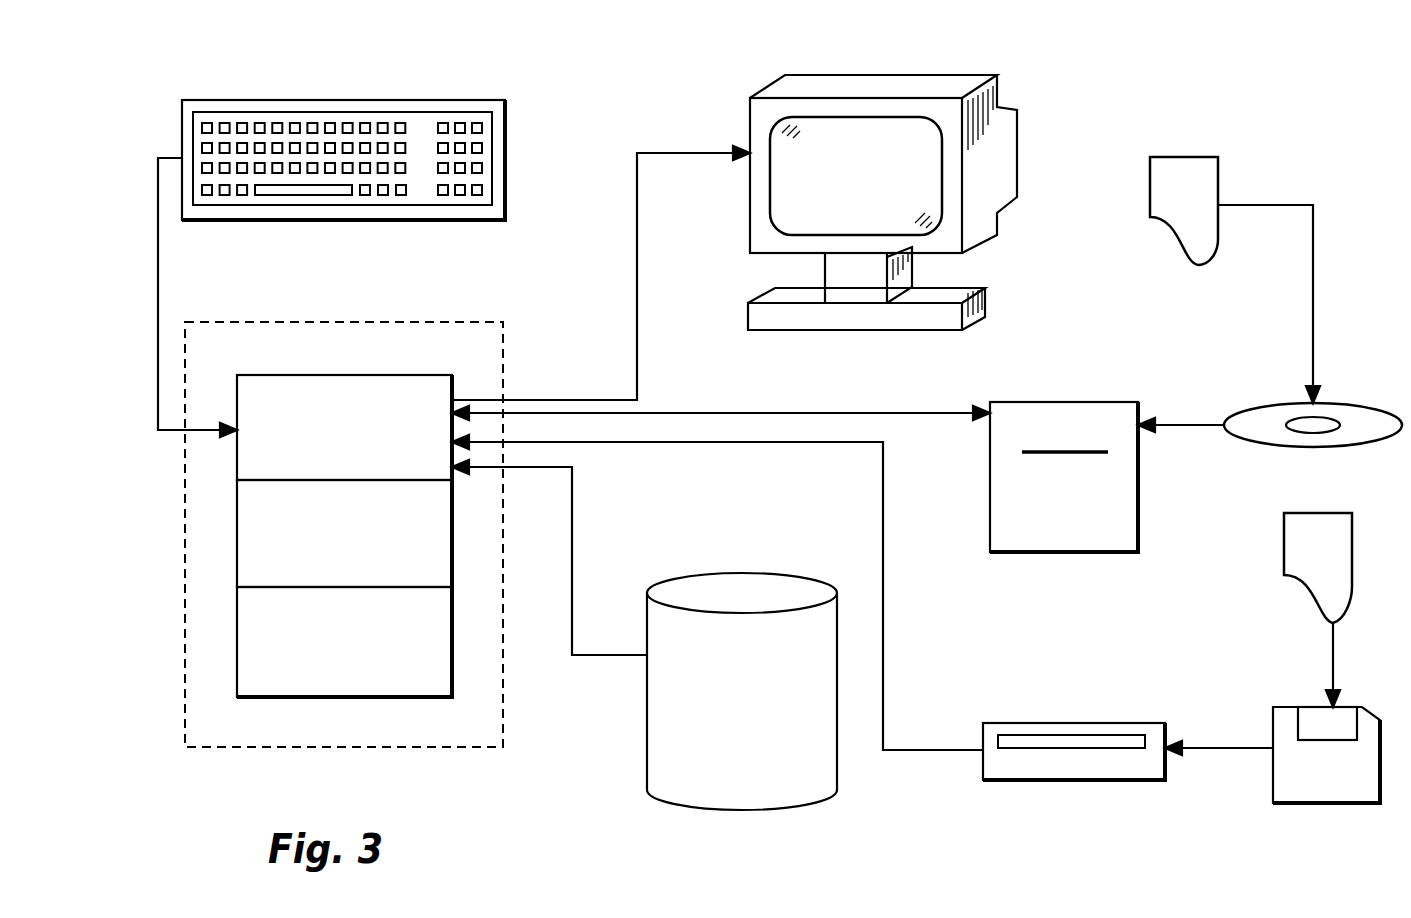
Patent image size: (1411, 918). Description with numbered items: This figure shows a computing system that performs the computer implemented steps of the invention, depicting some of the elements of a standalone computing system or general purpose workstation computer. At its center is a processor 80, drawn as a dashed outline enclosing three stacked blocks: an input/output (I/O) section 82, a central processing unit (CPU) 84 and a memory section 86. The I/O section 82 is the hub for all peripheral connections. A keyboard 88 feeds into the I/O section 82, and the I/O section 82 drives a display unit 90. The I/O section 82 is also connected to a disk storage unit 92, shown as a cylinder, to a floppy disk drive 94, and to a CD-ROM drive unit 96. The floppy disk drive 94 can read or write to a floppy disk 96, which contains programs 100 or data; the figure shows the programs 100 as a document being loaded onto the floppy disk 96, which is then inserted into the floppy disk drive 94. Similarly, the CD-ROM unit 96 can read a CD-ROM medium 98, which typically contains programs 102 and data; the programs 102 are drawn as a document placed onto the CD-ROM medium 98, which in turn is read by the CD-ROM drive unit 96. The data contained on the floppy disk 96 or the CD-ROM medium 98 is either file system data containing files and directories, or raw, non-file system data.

The processor 80 is at (455, 322).
The input/output (I/O) section 82 is at (323, 378).
The central processing unit (CPU) 84 is at (452, 562).
The memory section 86 is at (452, 657).
The keyboard 88 is at (482, 102).
The display unit 90 is at (947, 83).
The disk storage unit 92 is at (770, 573).
The floppy disk drive 94 is at (1127, 723).
The CD-ROM drive unit / floppy disk 96 is at (1018, 402).
The CD-ROM medium 98 is at (1290, 407).
The programs 100 is at (1282, 565).
The programs 102 is at (1163, 167).